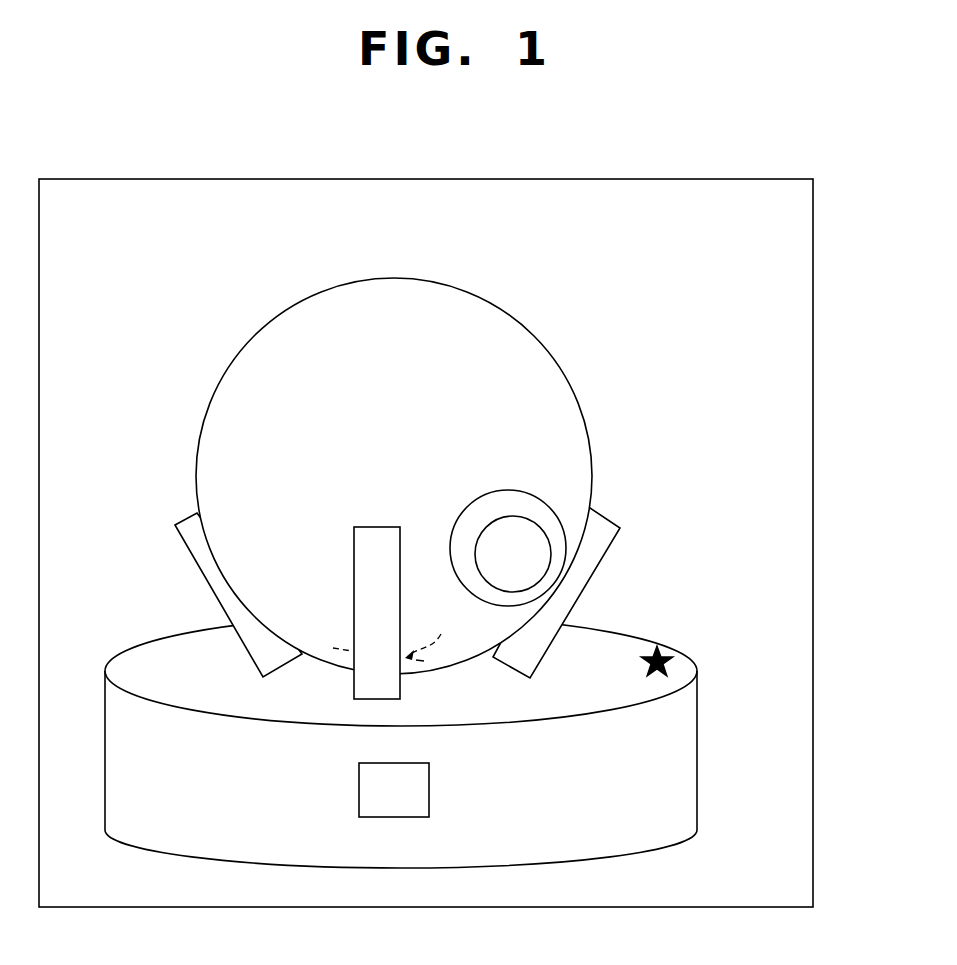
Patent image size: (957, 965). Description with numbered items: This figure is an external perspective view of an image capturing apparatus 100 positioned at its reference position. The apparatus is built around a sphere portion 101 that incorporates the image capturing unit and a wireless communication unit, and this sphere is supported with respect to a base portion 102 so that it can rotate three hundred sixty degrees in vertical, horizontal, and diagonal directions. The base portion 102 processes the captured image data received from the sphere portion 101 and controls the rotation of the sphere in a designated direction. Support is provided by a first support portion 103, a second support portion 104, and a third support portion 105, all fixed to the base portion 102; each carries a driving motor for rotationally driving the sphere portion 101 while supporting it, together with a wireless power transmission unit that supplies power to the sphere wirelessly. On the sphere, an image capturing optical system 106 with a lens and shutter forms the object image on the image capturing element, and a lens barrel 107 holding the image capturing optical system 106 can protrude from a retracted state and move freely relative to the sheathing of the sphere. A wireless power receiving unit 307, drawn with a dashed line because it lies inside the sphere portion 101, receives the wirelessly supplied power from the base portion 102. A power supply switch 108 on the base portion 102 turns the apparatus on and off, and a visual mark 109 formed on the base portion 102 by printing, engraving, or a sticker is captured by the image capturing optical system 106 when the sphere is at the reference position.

The image capturing apparatus 100 is at (814, 248).
The sphere portion 101 is at (390, 278).
The base portion 102 is at (660, 768).
The first support portion 103 is at (368, 547).
The second support portion 104 is at (612, 512).
The third support portion 105 is at (196, 562).
The image capturing optical system 106 is at (508, 517).
The lens barrel 107 is at (467, 507).
The power supply switch 108 is at (359, 793).
The mark 109 is at (664, 648).
The wireless power receiving unit 307 is at (397, 632).